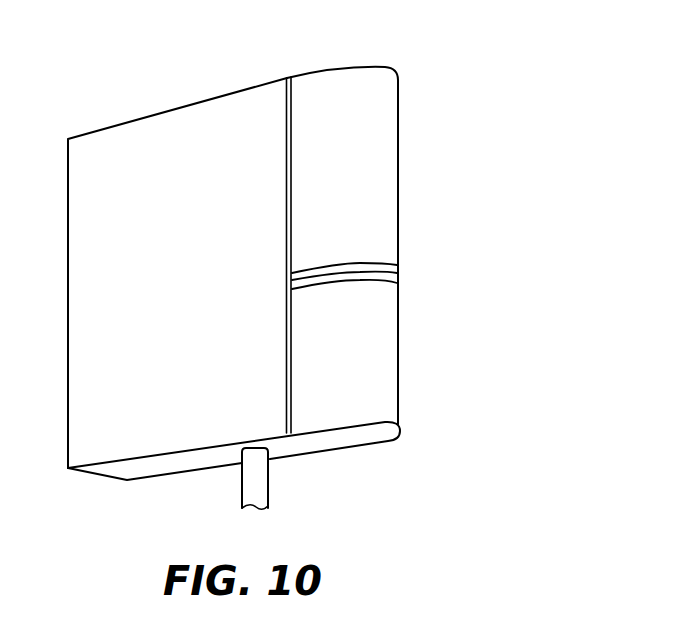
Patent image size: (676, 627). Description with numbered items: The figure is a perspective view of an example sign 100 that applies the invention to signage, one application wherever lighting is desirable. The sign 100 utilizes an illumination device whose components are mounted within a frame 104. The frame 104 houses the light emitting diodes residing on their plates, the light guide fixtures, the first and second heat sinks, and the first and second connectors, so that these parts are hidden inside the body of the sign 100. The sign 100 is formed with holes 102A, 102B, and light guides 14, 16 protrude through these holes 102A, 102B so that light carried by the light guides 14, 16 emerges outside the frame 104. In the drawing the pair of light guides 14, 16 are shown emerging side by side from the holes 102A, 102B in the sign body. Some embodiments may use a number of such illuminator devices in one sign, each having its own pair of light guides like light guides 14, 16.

The sign 100 is at (173, 78).
The frame 104 is at (222, 205).
The hole 102A is at (292, 273).
The hole 102B is at (292, 290).
The light guide 14 is at (381, 266).
The light guide 16 is at (381, 279).